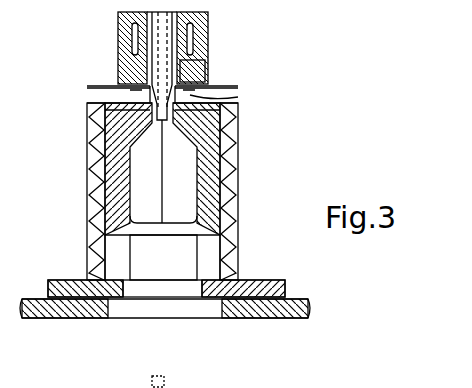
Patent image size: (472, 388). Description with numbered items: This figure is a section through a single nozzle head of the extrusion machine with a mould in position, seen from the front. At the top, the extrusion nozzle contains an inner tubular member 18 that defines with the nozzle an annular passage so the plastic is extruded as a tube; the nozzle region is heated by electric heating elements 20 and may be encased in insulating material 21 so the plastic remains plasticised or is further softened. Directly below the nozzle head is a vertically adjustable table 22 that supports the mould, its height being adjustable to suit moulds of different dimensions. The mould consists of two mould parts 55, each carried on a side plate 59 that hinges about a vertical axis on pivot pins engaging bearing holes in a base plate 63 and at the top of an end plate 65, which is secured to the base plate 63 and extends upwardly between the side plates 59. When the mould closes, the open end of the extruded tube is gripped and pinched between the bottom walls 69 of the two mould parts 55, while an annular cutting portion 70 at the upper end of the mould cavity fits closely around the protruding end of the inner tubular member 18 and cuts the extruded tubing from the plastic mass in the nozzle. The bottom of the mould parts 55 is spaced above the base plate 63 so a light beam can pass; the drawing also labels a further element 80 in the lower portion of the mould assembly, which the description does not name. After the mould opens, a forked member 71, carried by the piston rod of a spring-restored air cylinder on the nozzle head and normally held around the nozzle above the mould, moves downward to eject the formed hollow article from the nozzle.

The inner tubular member 18 is at (157, 108).
The electric heating elements 20 is at (190, 47).
The insulating material 21 is at (197, 68).
The table 22 is at (298, 297).
The mould part 55 is at (108, 193).
The side plate 59 is at (240, 212).
The base plate 63 is at (258, 282).
The end plate 65 is at (93, 85).
The bottom walls 69 is at (162, 225).
The annular cutting portion 70 is at (230, 122).
The forked member 71 is at (238, 93).
The side pocket 80 is at (196, 268).